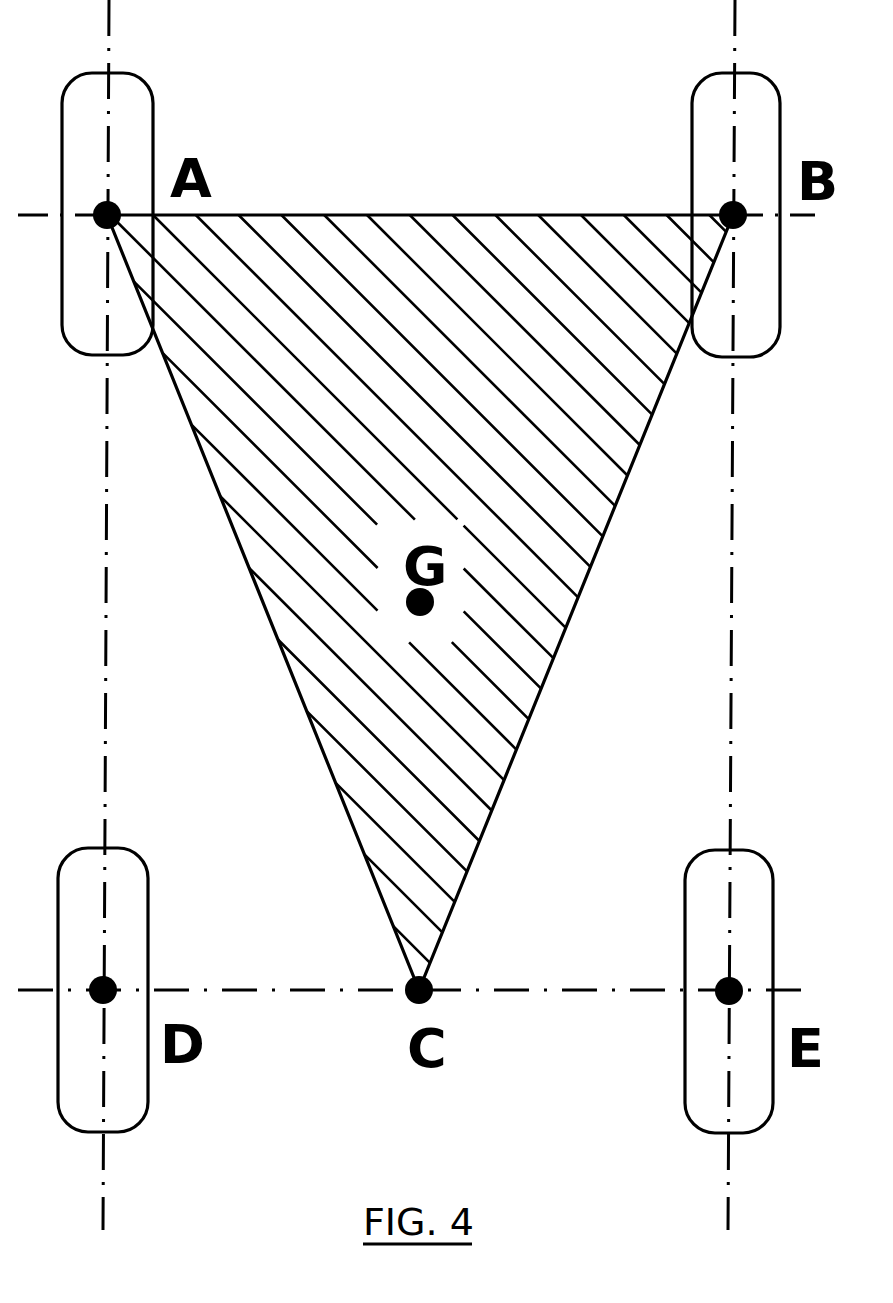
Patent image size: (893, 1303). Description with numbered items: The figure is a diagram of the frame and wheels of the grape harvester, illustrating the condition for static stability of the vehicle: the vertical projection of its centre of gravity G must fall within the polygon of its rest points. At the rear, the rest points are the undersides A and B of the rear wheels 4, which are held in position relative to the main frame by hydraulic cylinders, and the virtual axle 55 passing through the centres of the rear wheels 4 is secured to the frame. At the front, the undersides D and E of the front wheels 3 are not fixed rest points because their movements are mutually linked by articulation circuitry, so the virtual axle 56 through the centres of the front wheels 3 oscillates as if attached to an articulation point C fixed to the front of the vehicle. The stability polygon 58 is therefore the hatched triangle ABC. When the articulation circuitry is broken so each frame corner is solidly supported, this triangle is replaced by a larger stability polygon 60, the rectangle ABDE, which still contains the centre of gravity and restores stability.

The front wheel 3 is at (132, 1092).
The rear wheel 4 is at (128, 105).
The virtual axle 55 is at (437, 215).
The virtual axle 56 is at (558, 992).
The stability polygon 58 is at (548, 680).
The stability polygon 60 is at (733, 604).